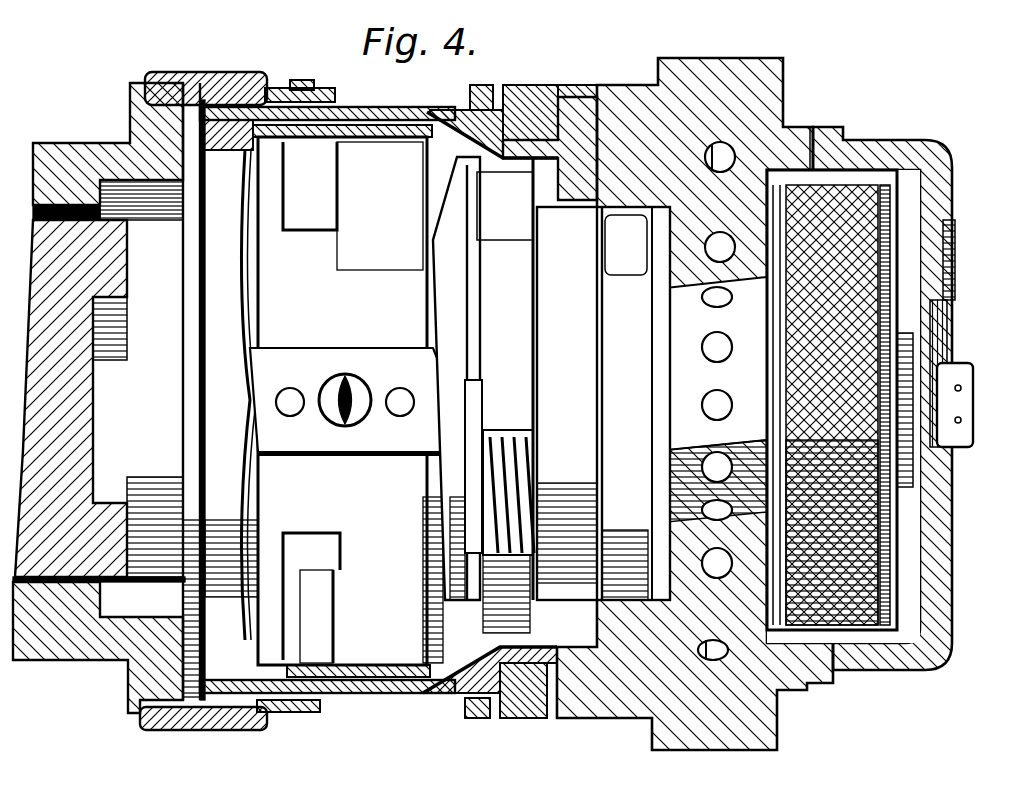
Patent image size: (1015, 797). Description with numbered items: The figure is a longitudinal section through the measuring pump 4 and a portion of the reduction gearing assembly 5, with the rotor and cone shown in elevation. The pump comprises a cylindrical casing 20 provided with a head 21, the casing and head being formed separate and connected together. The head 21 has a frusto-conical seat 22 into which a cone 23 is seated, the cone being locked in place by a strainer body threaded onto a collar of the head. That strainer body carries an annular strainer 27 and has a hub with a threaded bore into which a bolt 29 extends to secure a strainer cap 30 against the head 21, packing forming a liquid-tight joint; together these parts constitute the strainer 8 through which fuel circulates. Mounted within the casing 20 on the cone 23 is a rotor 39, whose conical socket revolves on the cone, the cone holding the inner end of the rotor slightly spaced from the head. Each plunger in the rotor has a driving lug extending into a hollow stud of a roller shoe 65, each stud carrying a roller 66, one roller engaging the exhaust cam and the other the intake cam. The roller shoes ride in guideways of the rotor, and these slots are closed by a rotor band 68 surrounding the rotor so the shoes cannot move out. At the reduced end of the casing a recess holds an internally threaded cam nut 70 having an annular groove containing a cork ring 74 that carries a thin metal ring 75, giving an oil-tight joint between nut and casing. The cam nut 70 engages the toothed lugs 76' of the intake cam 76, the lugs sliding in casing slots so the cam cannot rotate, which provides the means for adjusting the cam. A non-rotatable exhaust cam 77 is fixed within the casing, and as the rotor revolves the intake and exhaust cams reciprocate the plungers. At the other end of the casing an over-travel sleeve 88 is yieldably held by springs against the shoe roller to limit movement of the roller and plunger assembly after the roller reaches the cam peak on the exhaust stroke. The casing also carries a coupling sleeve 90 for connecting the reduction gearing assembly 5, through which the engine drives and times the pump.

The reduction gearing assembly 5 is at (66, 127).
The coupling sleeve 90 is at (175, 58).
The measuring pump 4 is at (296, 97).
The over-travel sleeve 88 is at (347, 118).
The rotor band 68 is at (397, 133).
The cylindrical casing 20 is at (467, 125).
The thin metal ring 75 is at (498, 107).
The cork ring 74 is at (535, 120).
The cam nut 70 is at (560, 127).
The head 21 is at (767, 80).
The annular strainer 27 is at (833, 197).
The strainer 8 is at (917, 157).
The rotor 39 is at (603, 403).
The frusto-conical seat 22 is at (763, 277).
The cone 23 is at (721, 376).
The strainer cap 30 is at (920, 283).
The bolt 29 is at (960, 373).
The exhaust cam 77 is at (227, 310).
The intake cam 76 is at (483, 378).
The roller shoe 65 is at (343, 358).
The roller 66 is at (248, 393).
The toothed lugs 76' is at (499, 499).